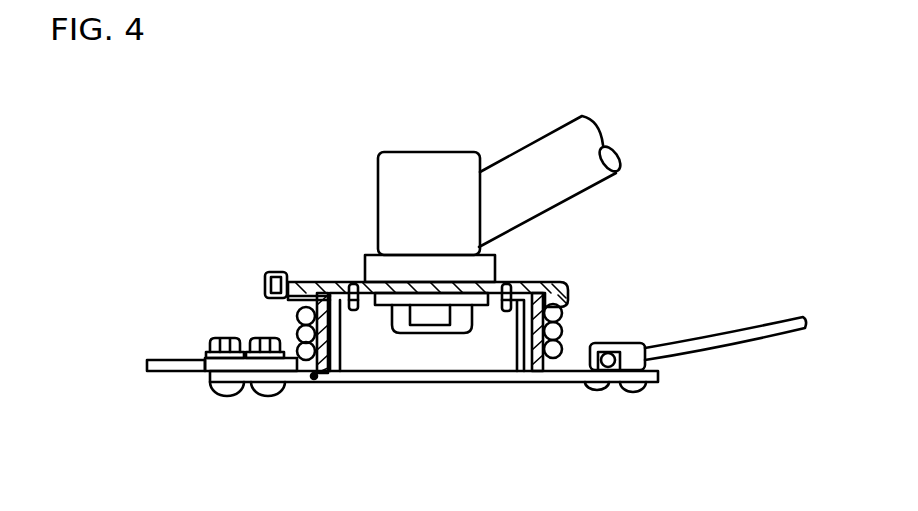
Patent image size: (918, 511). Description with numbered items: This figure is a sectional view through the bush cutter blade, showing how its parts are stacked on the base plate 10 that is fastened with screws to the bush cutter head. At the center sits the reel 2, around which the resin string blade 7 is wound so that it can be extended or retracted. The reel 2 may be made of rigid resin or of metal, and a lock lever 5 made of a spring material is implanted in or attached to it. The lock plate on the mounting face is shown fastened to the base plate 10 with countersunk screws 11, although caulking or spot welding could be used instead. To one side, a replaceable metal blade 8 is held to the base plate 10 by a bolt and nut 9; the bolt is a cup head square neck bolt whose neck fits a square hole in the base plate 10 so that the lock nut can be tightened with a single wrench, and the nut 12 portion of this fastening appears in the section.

The reel 2 is at (545, 365).
The lock lever 5 is at (263, 275).
The resin string blade 7 is at (557, 352).
The metal blade 8 is at (183, 362).
The bolt and nut 9 is at (217, 338).
The base plate 10 is at (314, 377).
The countersunk screws 11 is at (356, 307).
The nut 12 is at (435, 322).